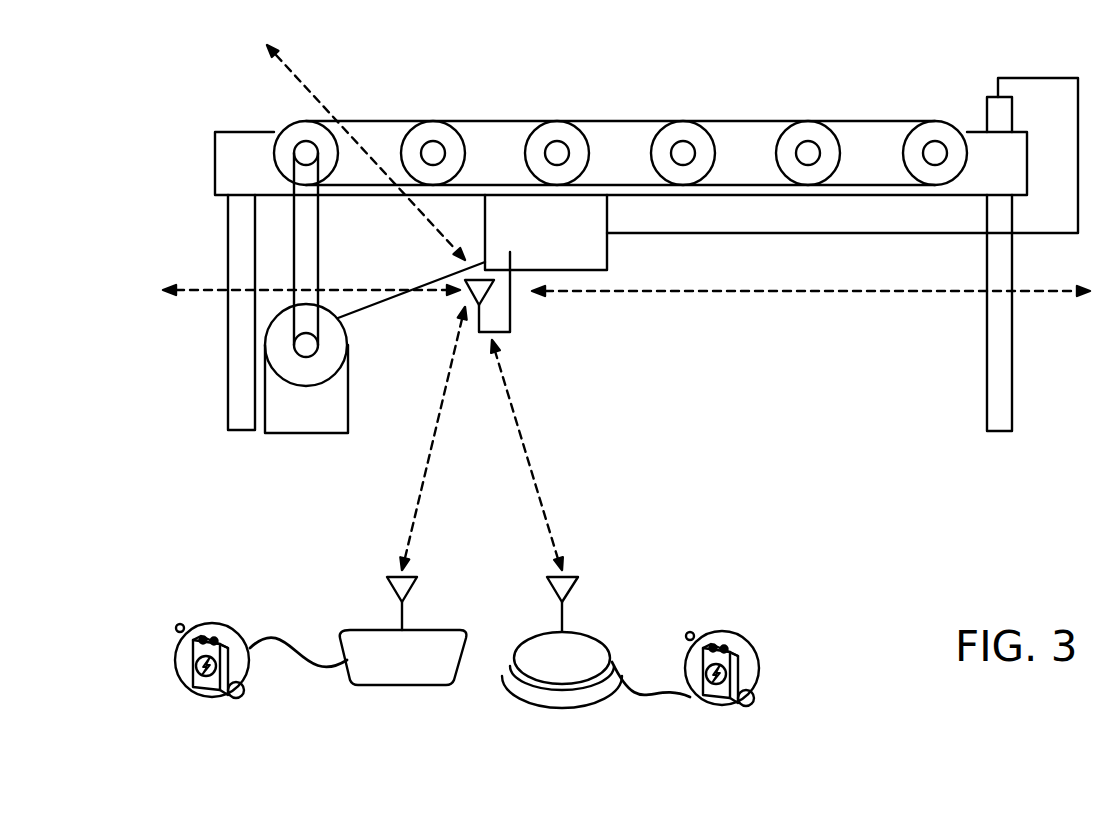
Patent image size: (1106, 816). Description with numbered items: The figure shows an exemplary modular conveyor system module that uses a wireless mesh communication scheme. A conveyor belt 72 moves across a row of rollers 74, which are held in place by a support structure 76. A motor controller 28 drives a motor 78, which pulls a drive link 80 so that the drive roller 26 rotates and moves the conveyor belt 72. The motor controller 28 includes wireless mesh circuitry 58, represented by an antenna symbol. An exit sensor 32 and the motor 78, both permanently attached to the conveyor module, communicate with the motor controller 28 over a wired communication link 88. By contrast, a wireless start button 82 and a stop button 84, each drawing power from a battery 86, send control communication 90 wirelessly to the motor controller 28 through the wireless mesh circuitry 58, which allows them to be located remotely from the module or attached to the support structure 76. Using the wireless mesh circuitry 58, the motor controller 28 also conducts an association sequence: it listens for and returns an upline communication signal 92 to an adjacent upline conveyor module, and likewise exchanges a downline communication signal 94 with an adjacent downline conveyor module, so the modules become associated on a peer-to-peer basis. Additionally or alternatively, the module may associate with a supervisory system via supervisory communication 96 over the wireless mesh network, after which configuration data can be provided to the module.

The drive roller 26 is at (295, 128).
The motor controller 28 is at (608, 245).
The exit sensor 32 is at (985, 108).
The wireless mesh circuitry 58 is at (468, 293).
The conveyor belt 72 is at (730, 120).
The rollers 74 is at (530, 136).
The support structure 76 is at (1028, 155).
The motor 78 is at (340, 345).
The drive link 80 is at (320, 217).
The start button 82 is at (400, 686).
The stop button 84 is at (565, 710).
The battery 86 is at (207, 693).
The wired communication link 88 is at (437, 278).
The control communication 90 is at (512, 410).
The upline communication signal 92 is at (210, 293).
The downline communication signal 94 is at (935, 291).
The supervisory communication 96 is at (308, 88).